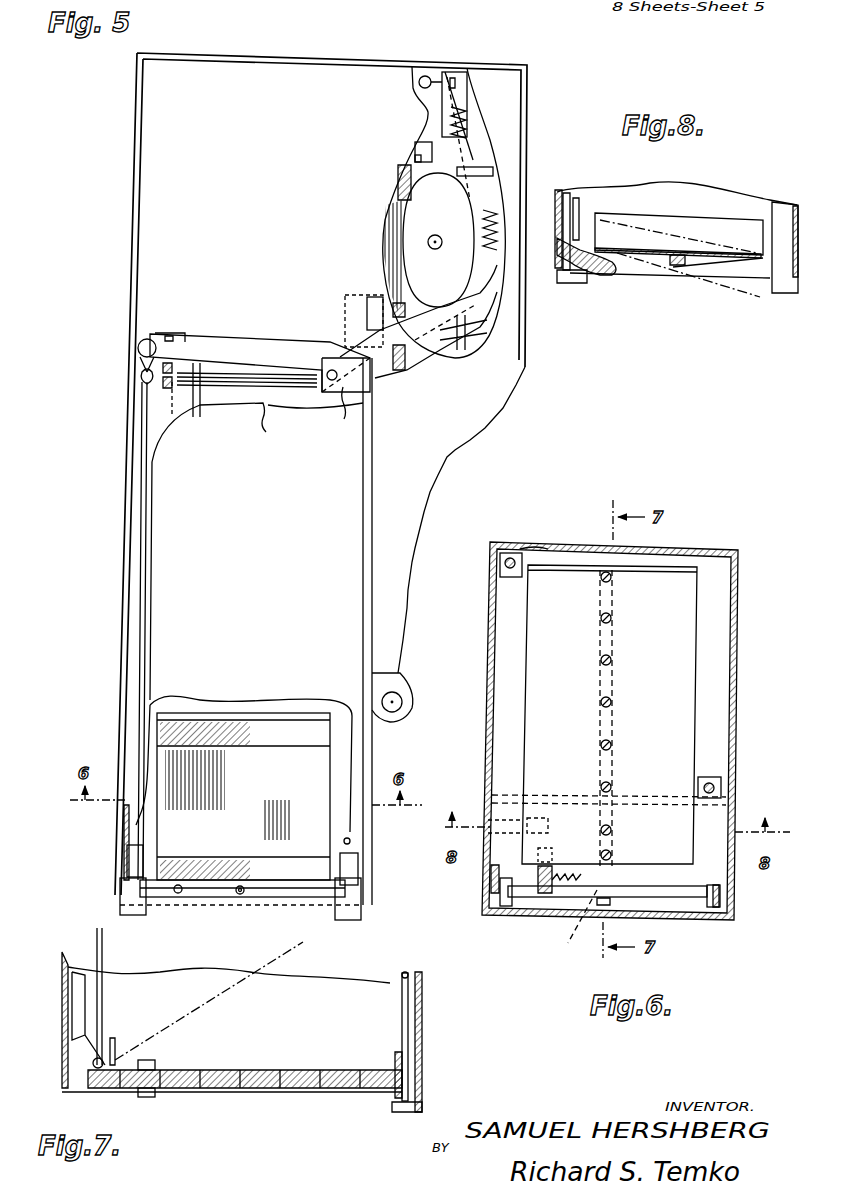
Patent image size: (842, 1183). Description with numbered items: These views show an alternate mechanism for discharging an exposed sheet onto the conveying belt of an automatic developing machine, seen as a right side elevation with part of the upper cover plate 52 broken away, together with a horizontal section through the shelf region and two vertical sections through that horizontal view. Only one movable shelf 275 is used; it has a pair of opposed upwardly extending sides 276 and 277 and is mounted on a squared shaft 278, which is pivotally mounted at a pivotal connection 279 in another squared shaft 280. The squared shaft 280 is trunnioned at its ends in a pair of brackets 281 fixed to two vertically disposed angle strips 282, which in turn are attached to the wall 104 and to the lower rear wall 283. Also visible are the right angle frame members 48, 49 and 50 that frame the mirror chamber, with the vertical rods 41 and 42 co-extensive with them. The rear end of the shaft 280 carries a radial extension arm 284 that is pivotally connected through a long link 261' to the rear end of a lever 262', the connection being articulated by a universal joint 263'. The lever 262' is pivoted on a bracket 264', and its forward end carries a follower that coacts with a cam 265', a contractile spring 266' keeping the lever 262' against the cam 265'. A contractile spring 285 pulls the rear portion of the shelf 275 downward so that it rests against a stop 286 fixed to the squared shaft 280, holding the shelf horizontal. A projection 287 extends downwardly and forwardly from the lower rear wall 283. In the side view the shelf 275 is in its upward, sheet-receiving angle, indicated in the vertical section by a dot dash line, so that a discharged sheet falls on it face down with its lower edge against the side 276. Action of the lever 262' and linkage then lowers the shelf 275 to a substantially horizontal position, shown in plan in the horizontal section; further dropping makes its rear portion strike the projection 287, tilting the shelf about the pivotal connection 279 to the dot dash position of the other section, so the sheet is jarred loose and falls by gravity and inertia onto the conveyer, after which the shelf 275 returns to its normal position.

In FIG. 5, the upper cover plate 52 is at (378, 58).
In FIG. 5, the wall 104 is at (373, 733).
In FIG. 6, the wall 104 is at (738, 691).
In FIG. 5, the cam 265' is at (481, 212).
In FIG. 5, the contractile spring 266' is at (499, 136).
In FIG. 5, the bracket 264' is at (407, 362).
In FIG. 5, the lever 262' is at (260, 394).
In FIG. 5, the universal joint 263' is at (97, 361).
In FIG. 5, the long link 261' is at (197, 621).
In FIG. 5, the lower rear wall 283 is at (122, 706).
In FIG. 8, the lower rear wall 283 is at (676, 232).
In FIG. 6, the lower rear wall 283 is at (488, 669).
In FIG. 7, the lower rear wall 283 is at (67, 1023).
In FIG. 5, the side 277 is at (277, 738).
In FIG. 7, the side 277 is at (397, 1052).
In FIG. 5, the side 276 is at (237, 843).
In FIG. 7, the side 276 is at (112, 1040).
In FIG. 5, the movable shelf 275 is at (307, 788).
In FIG. 8, the movable shelf 275 is at (722, 250).
In FIG. 6, the movable shelf 275 is at (665, 672).
In FIG. 7, the movable shelf 275 is at (255, 1068).
In FIG. 5, the squared shaft 280 is at (207, 892).
In FIG. 6, the squared shaft 280 is at (670, 897).
In FIG. 5, the right angle frame member 48 is at (137, 910).
In FIG. 5, the right angle frame member 49 is at (350, 913).
In FIG. 6, the right angle frame member 49 is at (722, 779).
In FIG. 5, the brackets 281 is at (133, 862).
In FIG. 6, the brackets 281 is at (508, 908).
In FIG. 5, the angle strips 282 is at (123, 823).
In FIG. 6, the angle strips 282 is at (483, 912).
In FIG. 8, the projection 287 is at (603, 274).
In FIG. 6, the right angle frame member 50 is at (548, 549).
In FIG. 6, the vertical rod 42 is at (502, 578).
In FIG. 6, the squared shaft 278 is at (614, 724).
In FIG. 7, the squared shaft 278 is at (250, 1090).
In FIG. 6, the vertical rod 41 is at (713, 778).
In FIG. 6, the radial extension arm 284 is at (505, 882).
In FIG. 6, the contractile spring 285 is at (560, 877).
In FIG. 6, the stop 286 is at (533, 875).
In FIG. 6, the pivotal connection 279 is at (572, 930).